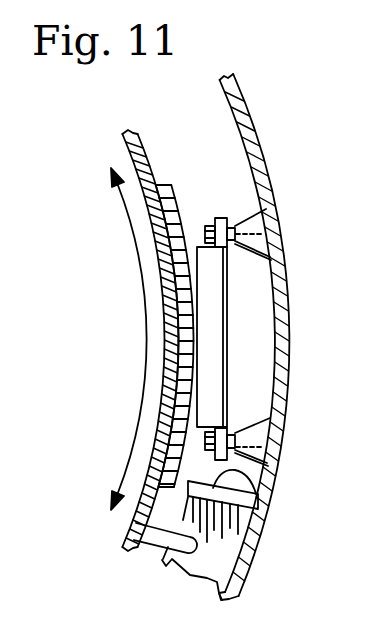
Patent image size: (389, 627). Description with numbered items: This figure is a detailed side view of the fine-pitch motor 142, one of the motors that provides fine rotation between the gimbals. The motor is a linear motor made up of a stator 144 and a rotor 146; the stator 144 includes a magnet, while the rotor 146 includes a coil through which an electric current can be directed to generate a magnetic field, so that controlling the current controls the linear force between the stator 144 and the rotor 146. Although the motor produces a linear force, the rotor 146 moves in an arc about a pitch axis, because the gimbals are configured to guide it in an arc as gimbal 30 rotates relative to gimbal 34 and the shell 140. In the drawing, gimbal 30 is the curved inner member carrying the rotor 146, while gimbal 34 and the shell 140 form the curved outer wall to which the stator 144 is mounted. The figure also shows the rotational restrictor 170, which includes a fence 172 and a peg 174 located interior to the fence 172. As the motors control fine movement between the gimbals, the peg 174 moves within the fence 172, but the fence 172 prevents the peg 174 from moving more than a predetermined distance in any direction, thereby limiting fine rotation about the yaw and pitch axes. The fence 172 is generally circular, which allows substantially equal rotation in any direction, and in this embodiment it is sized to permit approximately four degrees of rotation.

The gimbal 30 is at (147, 132).
The gimbal 34 is at (286, 118).
The shell 140 is at (267, 208).
The fine-pitch motor 142 is at (181, 101).
The stator 144 is at (199, 228).
The rotor 146 is at (167, 184).
The rotational restrictor 170 is at (178, 580).
The fence 172 is at (258, 481).
The peg 174 is at (147, 546).